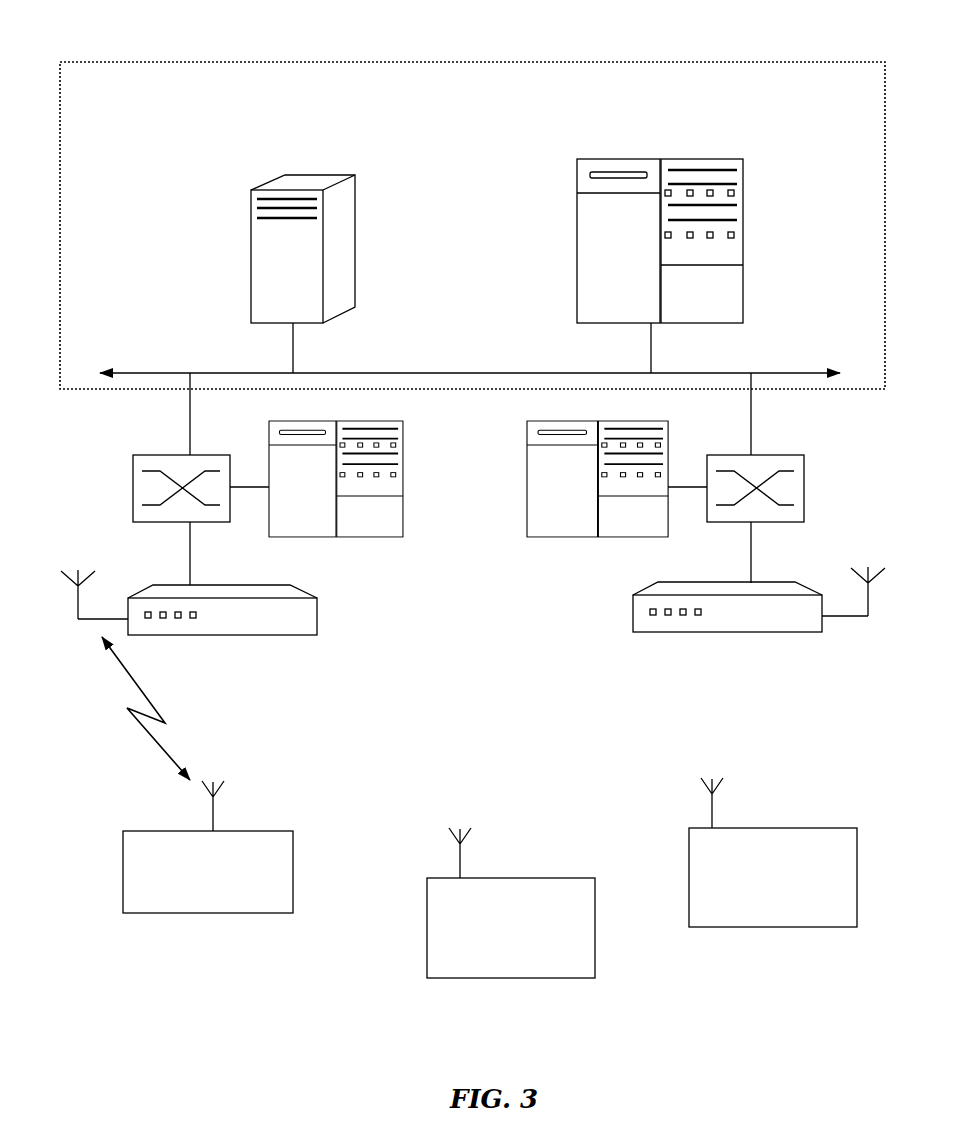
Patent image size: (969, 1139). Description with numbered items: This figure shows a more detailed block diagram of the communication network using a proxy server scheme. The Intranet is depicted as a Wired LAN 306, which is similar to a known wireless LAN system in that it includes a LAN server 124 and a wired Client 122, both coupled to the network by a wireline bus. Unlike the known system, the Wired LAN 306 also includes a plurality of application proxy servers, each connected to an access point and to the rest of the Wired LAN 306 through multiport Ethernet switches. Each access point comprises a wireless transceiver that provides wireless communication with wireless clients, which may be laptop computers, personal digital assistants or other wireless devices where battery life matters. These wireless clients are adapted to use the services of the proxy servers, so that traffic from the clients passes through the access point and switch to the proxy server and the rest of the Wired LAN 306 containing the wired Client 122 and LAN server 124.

The Wired LAN 306 is at (145, 80).
The wired Client 122 is at (251, 241).
The LAN server 124 is at (577, 240).